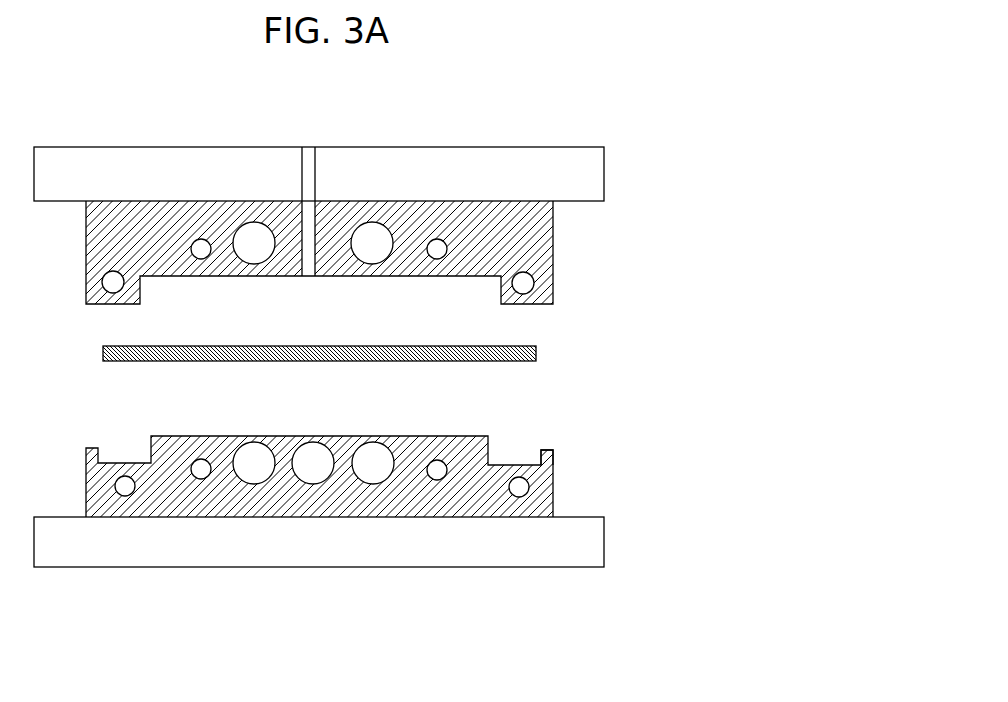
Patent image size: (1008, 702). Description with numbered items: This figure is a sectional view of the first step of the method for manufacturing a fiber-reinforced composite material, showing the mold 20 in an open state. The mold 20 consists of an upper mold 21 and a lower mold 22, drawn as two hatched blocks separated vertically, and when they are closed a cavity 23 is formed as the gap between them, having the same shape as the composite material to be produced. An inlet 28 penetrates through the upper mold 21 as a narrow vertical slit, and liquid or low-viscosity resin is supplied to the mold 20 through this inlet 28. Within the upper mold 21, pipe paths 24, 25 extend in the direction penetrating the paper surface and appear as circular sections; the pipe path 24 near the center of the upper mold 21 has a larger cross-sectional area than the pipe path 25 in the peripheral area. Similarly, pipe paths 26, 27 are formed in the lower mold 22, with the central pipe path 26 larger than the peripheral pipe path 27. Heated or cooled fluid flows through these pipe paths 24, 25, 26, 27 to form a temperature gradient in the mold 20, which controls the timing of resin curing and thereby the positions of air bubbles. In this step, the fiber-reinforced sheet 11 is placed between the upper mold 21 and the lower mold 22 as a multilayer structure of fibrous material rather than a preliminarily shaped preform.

The mold 20 is at (632, 116).
The upper mold 21 is at (553, 245).
The lower mold 22 is at (553, 481).
The cavity 23 is at (553, 462).
The pipe path 24 is at (378, 148).
The pipe path 25 is at (447, 148).
The pipe path 26 is at (377, 484).
The pipe path 27 is at (437, 480).
The inlet 28 is at (305, 148).
The fiber-reinforced sheet 11 is at (538, 351).